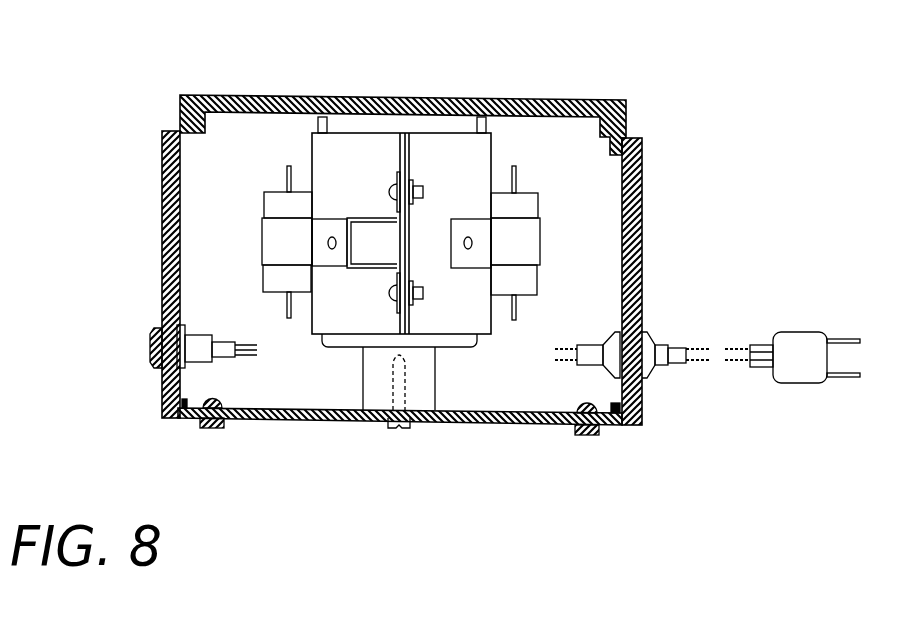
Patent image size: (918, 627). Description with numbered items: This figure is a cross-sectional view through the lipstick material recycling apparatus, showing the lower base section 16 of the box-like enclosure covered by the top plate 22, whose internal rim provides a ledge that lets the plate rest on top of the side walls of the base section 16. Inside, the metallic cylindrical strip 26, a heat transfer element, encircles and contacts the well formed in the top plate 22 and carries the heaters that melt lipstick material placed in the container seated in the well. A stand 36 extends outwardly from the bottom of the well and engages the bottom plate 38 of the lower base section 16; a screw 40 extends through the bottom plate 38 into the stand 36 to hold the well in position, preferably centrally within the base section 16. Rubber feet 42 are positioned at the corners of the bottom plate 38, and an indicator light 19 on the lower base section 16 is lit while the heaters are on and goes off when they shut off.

The lower base section 16 is at (642, 217).
The indicator light 19 is at (153, 328).
The top plate 22 is at (483, 97).
The metallic cylindrical strip 26 is at (473, 317).
The stand 36 is at (368, 395).
The bottom plate 38 is at (470, 422).
The screw 40 is at (407, 427).
The feet 42 is at (225, 427).